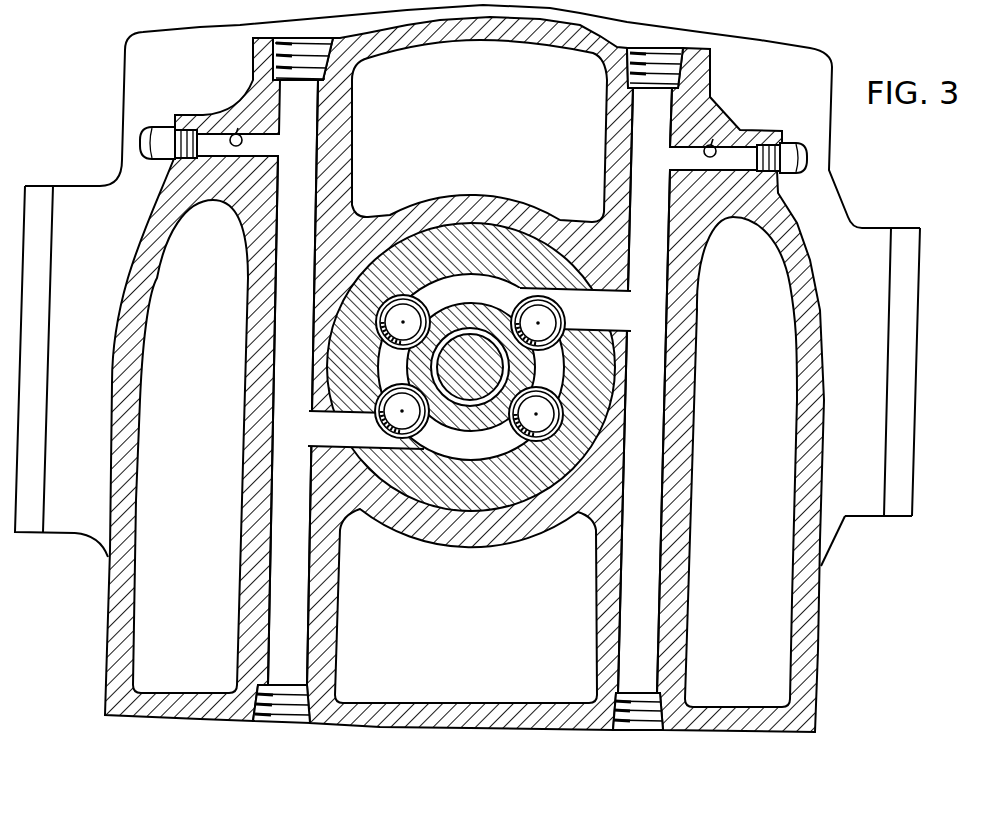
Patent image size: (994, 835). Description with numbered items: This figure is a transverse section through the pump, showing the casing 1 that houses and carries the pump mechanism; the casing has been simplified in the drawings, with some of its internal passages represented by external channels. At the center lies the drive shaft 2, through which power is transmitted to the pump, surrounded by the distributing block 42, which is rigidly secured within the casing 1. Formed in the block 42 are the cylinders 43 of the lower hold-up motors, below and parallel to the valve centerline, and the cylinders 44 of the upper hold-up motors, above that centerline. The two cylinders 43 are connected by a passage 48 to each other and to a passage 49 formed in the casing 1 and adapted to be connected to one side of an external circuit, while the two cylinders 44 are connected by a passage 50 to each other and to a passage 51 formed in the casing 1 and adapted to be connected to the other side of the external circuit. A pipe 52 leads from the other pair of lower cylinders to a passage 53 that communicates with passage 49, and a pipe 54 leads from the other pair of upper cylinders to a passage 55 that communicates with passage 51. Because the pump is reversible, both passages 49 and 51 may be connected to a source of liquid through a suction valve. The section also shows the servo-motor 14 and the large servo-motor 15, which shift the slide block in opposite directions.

The casing 1 is at (806, 633).
The drive shaft 2 is at (453, 365).
The servo-motor 14 is at (90, 522).
The large servo-motor 15 is at (866, 510).
The distributing block 42 is at (445, 512).
The cylinder 43 is at (505, 443).
The cylinder 44 is at (515, 296).
The passage 48 is at (333, 437).
The passage 49 is at (283, 512).
The passage 50 is at (616, 320).
The passage 51 is at (636, 405).
The pipe 52 is at (157, 137).
The passage 53 is at (236, 132).
The pipe 54 is at (790, 157).
The passage 55 is at (718, 143).